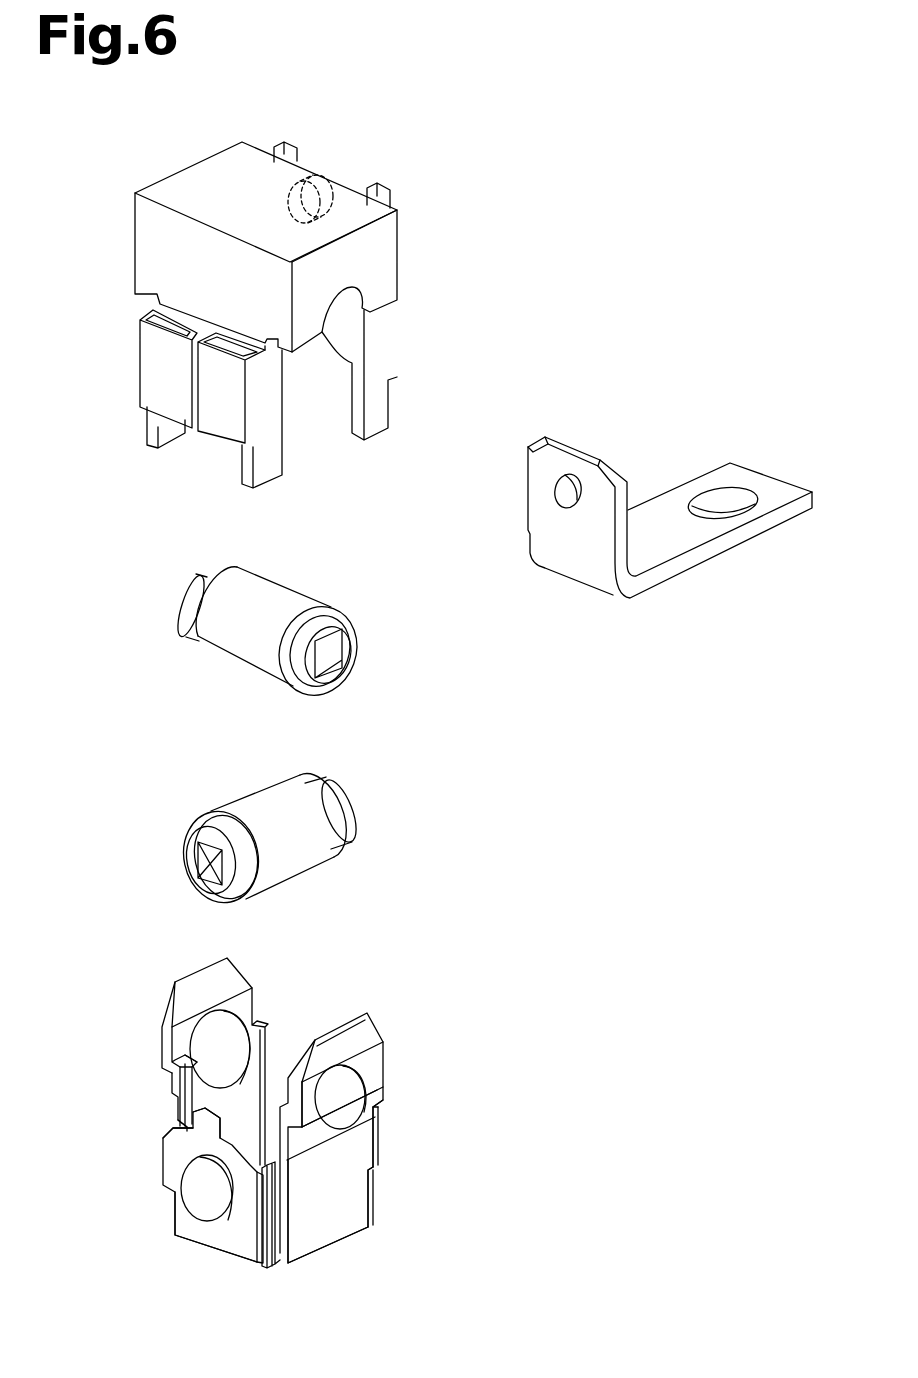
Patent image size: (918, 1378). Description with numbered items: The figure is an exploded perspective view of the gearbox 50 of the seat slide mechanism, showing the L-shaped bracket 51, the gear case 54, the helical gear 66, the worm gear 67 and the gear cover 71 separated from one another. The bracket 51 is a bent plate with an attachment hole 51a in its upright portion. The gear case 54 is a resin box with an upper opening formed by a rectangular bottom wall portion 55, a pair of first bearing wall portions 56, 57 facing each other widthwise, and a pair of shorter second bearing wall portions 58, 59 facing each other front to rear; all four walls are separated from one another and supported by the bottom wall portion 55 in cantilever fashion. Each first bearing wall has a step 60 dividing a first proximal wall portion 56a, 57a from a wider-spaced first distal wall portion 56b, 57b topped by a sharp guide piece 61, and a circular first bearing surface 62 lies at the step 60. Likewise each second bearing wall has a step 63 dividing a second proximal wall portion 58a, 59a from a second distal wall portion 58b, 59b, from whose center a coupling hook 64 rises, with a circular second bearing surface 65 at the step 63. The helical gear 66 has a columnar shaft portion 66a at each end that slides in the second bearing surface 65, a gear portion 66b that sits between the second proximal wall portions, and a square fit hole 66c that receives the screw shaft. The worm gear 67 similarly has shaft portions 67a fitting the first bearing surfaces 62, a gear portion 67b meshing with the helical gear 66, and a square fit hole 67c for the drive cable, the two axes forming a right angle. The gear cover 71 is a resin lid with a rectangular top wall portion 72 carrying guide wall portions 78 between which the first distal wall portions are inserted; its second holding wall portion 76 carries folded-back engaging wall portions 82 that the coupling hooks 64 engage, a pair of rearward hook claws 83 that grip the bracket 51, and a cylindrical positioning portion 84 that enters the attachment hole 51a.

The gearbox 50 is at (528, 262).
The L-shaped bracket 51 is at (740, 467).
The attachment hole 51a is at (568, 475).
The gear case 54 is at (310, 1242).
The bottom wall portion 55 is at (270, 1265).
The first bearing wall portion 56 is at (170, 1098).
The first proximal wall portion 56a is at (172, 1087).
The first distal wall portion 56b is at (160, 1027).
The first bearing wall portion 57 is at (367, 1175).
The first proximal wall portion 57a is at (347, 1227).
The first distal wall portion 57b is at (373, 1053).
The second bearing wall portion 58 is at (182, 1233).
The second proximal wall portion 58a is at (178, 1217).
The second distal wall portion 58b is at (170, 1153).
The second bearing wall portion 59 is at (380, 1133).
The second proximal wall portion 59a is at (375, 1193).
The second distal wall portion 59b is at (388, 1107).
The step 60 is at (195, 1058).
The guide piece 61 is at (197, 977).
The first bearing surface 62 is at (243, 1038).
The step 63 is at (250, 1193).
The coupling hook 64 is at (170, 1070).
The second bearing surface 65 is at (218, 1145).
The helical gear 66 is at (269, 825).
The shaft portion 66a is at (218, 830).
The gear portion 66b is at (267, 802).
The fit hole 66c is at (200, 865).
The worm gear 67 is at (285, 627).
The shaft portion 67a is at (193, 590).
The gear portion 67b is at (273, 590).
The fit hole 67c is at (332, 670).
The gear cover 71 is at (257, 152).
The top wall portion 72 is at (192, 175).
The second holding wall portion 76 is at (308, 172).
The guide wall portion 78 is at (387, 262).
The engaging wall portion 82 is at (143, 360).
The hook claw 83 is at (288, 145).
The positioning portion 84 is at (338, 181).